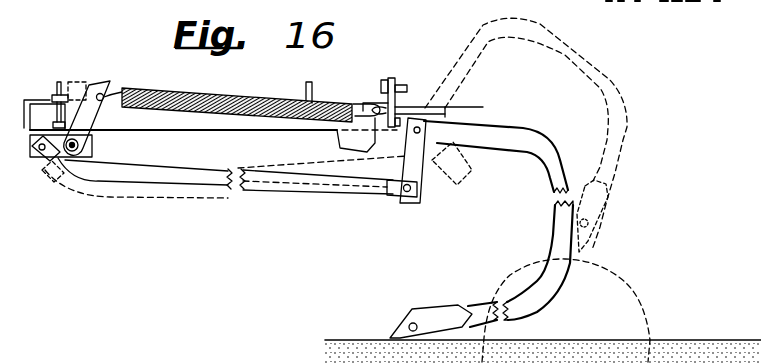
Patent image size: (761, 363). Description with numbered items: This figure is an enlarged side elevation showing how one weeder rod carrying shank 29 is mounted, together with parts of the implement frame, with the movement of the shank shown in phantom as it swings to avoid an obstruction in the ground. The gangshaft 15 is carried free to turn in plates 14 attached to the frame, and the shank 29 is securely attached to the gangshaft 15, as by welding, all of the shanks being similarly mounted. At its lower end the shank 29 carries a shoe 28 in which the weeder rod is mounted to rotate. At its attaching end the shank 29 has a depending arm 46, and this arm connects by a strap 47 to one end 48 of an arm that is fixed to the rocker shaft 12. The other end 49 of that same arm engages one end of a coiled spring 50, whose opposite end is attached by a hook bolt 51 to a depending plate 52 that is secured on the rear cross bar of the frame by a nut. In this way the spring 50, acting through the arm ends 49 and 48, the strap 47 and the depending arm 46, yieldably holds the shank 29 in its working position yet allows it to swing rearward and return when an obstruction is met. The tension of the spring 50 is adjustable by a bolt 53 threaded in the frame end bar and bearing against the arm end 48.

The rocker shaft 12 is at (86, 146).
The plates 14 is at (420, 107).
The gangshaft 15 is at (413, 132).
The shoe 28 is at (403, 318).
The shank 29 is at (555, 205).
The depending arm 46 is at (421, 190).
The strap 47 is at (205, 178).
The end of arm fixed to rocker shaft 48 is at (33, 158).
The other end of arm 49 is at (102, 94).
The coiled spring 50 is at (210, 94).
The hook bolt 51 is at (372, 103).
The depending plate 52 is at (393, 86).
The adjusting bolt 53 is at (60, 95).